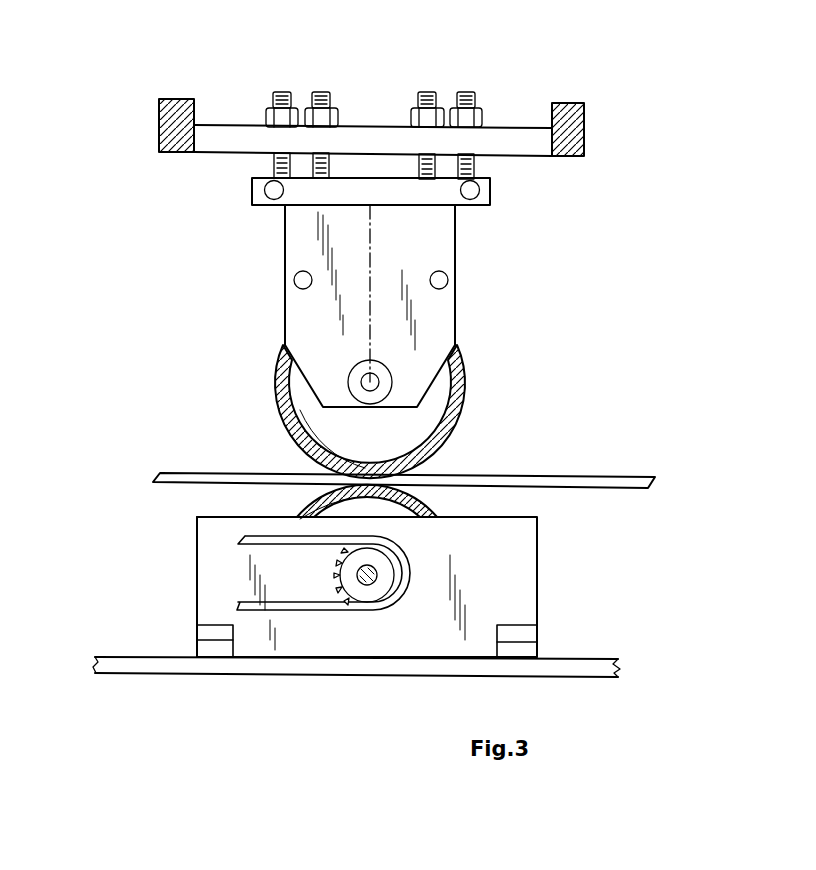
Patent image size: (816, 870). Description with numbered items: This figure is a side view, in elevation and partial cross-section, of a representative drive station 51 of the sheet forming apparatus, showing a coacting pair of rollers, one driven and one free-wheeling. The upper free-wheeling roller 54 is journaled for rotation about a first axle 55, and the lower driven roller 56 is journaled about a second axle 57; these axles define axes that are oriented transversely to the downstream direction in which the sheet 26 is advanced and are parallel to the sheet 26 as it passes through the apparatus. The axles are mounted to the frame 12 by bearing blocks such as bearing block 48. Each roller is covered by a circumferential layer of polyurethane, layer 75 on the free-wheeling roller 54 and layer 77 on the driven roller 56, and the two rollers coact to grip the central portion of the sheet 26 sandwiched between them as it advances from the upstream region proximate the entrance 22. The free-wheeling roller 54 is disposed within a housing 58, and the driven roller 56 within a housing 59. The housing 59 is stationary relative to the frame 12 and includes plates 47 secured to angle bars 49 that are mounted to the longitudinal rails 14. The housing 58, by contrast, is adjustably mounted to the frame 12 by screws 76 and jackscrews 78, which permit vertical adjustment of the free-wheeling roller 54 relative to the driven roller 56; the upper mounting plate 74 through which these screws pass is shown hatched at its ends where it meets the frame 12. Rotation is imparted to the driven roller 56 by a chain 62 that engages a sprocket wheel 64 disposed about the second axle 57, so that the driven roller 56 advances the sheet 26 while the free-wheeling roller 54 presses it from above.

The frame 12 is at (180, 100).
The longitudinal rails 14 is at (367, 665).
The entrance 22 is at (584, 389).
The sheet 26 is at (462, 477).
The plates 47 is at (527, 573).
The bearing block 48 is at (352, 368).
The angle bars 49 is at (205, 628).
The drive station 51 is at (594, 226).
The free-wheeling roller 54 is at (412, 426).
The first axle 55 is at (390, 370).
The driven roller 56 is at (430, 507).
The second axle 57 is at (368, 585).
The housing 58 is at (300, 232).
The housing 59 is at (209, 561).
The chain 62 is at (318, 610).
The sprocket wheel 64 is at (375, 563).
The mounting plate 74 is at (496, 143).
The circumferential layer of polyurethane 75 is at (276, 372).
The screws 76 is at (322, 92).
The circumferential layer of polyurethane 77 is at (305, 513).
The jackscrews 78 is at (268, 100).